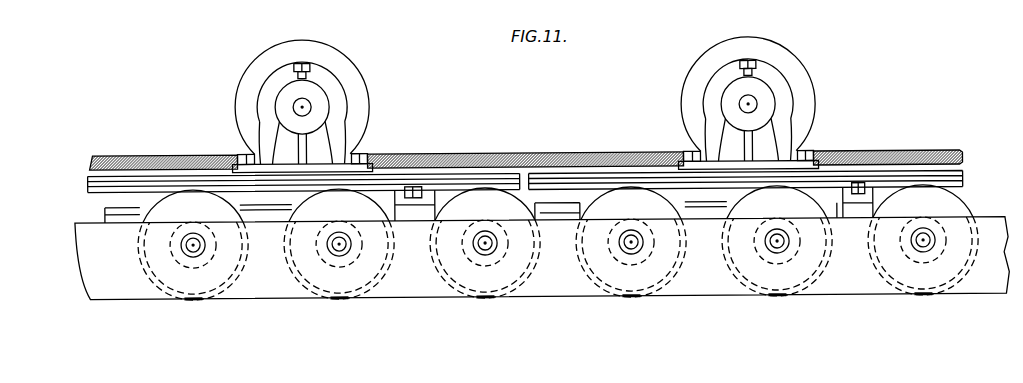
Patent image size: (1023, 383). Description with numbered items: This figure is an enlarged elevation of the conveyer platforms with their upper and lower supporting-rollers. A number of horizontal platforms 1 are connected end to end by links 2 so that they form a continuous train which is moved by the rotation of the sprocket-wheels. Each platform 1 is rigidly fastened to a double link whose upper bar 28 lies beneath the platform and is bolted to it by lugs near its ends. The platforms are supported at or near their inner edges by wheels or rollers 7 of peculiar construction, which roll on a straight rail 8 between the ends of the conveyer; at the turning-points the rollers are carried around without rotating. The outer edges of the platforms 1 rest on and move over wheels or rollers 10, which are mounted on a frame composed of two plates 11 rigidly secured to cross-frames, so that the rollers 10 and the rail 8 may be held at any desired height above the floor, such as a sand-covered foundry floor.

The horizontal platform 1 is at (137, 174).
The link 2 is at (105, 214).
The wheel or roller 7 is at (357, 107).
The straight rail 8 is at (462, 153).
The wheel or roller 10 is at (558, 243).
The plate 11 is at (542, 258).
The upper bar 28 is at (290, 191).